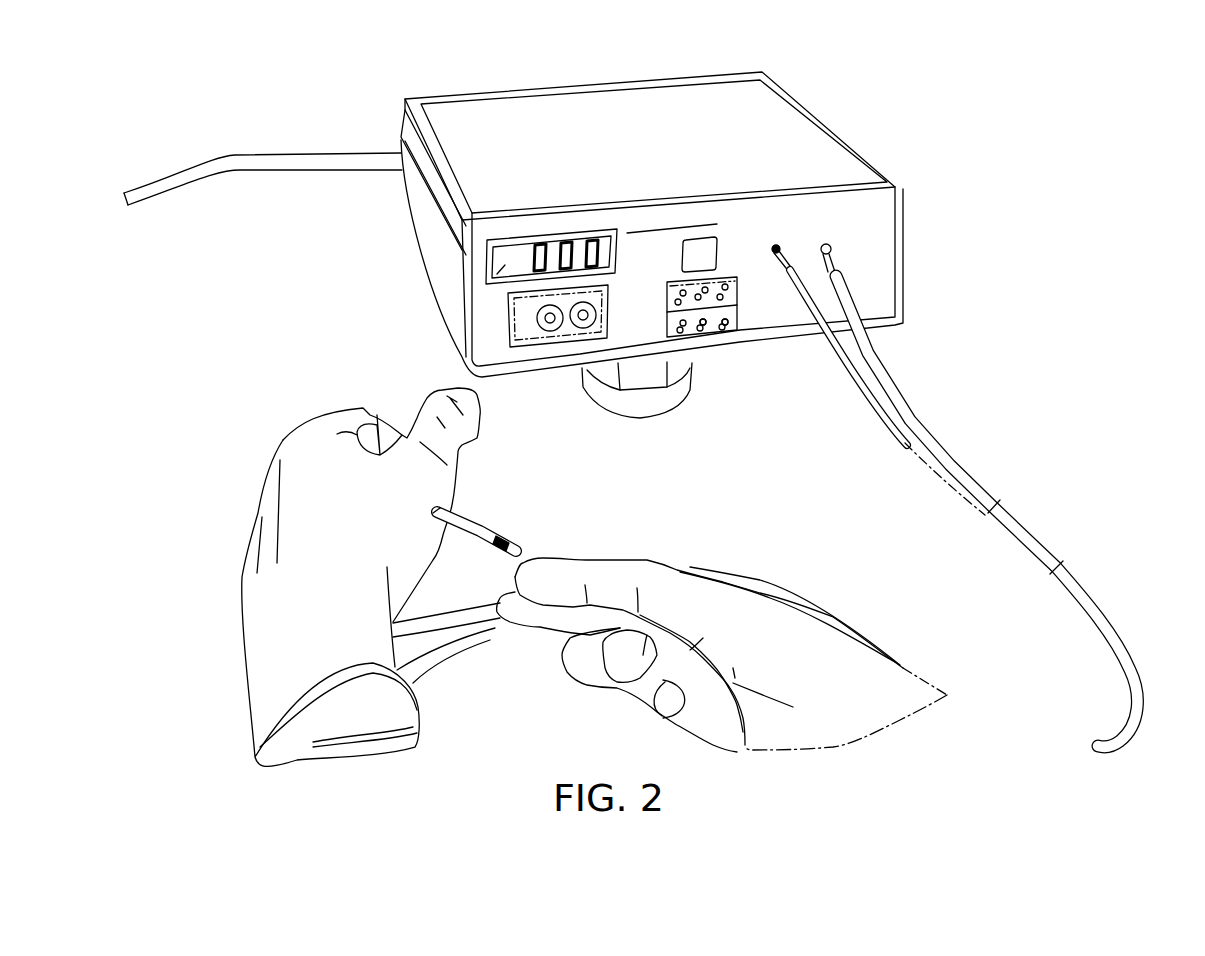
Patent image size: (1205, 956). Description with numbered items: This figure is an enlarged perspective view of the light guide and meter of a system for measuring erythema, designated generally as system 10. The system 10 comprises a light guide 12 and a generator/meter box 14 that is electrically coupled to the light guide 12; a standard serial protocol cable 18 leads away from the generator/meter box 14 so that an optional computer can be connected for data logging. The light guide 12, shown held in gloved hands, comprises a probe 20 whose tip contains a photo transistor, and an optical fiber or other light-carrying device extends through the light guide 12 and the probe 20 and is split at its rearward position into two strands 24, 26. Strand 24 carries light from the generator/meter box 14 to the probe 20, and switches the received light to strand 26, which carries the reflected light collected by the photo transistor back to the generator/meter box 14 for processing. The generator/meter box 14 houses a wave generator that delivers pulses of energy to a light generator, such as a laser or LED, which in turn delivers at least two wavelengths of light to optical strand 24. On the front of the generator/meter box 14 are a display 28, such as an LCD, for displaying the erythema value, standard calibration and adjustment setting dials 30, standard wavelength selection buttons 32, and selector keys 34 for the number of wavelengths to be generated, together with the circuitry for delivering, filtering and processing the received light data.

The system for measuring erythema 10 is at (630, 409).
The light guide 12 is at (750, 737).
The generator/meter box 14 is at (417, 262).
The RS 232 protocol cable 18 is at (268, 163).
The probe 20 is at (480, 517).
The optical fiber strand 24 is at (882, 352).
The optical fiber strand 26 is at (842, 340).
The display 28 is at (487, 282).
The calibration and adjustment setting dials 30 is at (683, 327).
The wavelength selection buttons 32 is at (702, 326).
The number of wavelengths selector keys 34 is at (725, 326).